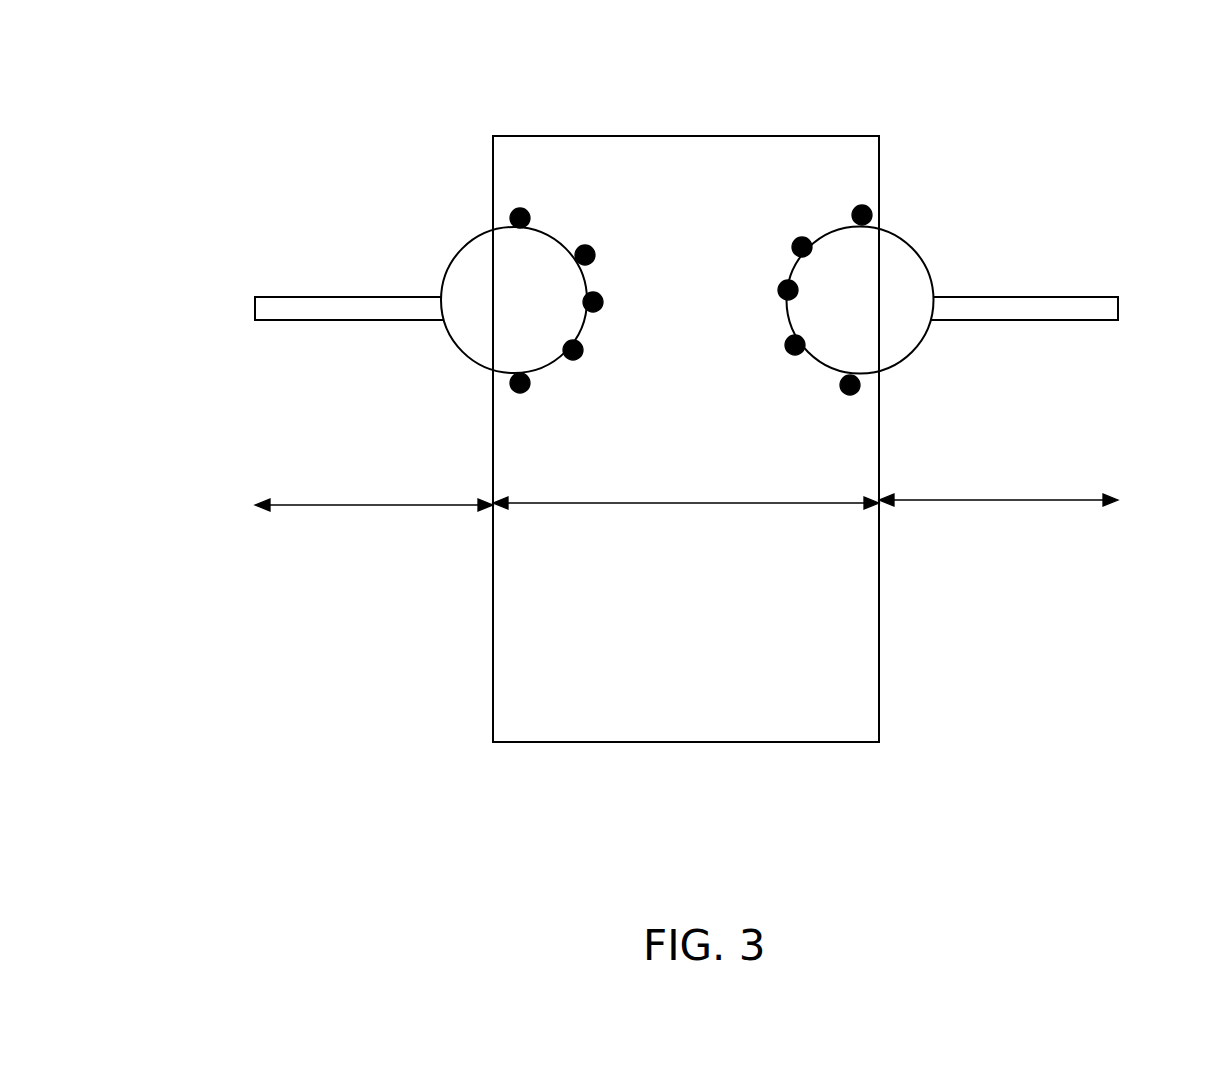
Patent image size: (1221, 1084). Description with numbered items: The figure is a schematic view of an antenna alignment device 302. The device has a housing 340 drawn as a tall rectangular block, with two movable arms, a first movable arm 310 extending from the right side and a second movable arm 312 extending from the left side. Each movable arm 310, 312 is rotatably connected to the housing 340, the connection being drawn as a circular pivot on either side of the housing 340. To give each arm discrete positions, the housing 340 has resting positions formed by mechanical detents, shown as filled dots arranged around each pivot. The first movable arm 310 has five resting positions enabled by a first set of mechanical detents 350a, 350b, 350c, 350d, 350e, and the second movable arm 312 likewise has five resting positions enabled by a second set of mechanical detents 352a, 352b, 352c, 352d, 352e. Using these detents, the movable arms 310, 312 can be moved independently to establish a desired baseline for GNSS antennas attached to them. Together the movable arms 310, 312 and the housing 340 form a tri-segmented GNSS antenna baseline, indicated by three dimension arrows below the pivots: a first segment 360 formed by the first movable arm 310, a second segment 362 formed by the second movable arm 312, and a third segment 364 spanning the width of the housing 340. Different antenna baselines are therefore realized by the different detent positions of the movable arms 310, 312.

The antenna alignment device 302 is at (669, 450).
The housing 340 is at (752, 136).
The second movable arm 312 is at (308, 303).
The first movable arm 310 is at (1063, 302).
The mechanical detent 352a is at (555, 421).
The mechanical detent 352b is at (607, 386).
The mechanical detent 352c is at (655, 314).
The mechanical detent 352d is at (652, 266).
The mechanical detent 352e is at (590, 229).
The mechanical detent 350a is at (831, 402).
The mechanical detent 350b is at (781, 357).
The mechanical detent 350c is at (774, 301).
The mechanical detent 350d is at (789, 247).
The mechanical detent 350e is at (846, 217).
The second segment 362 is at (355, 503).
The housing width dimension 364 is at (625, 503).
The first segment 360 is at (1010, 500).